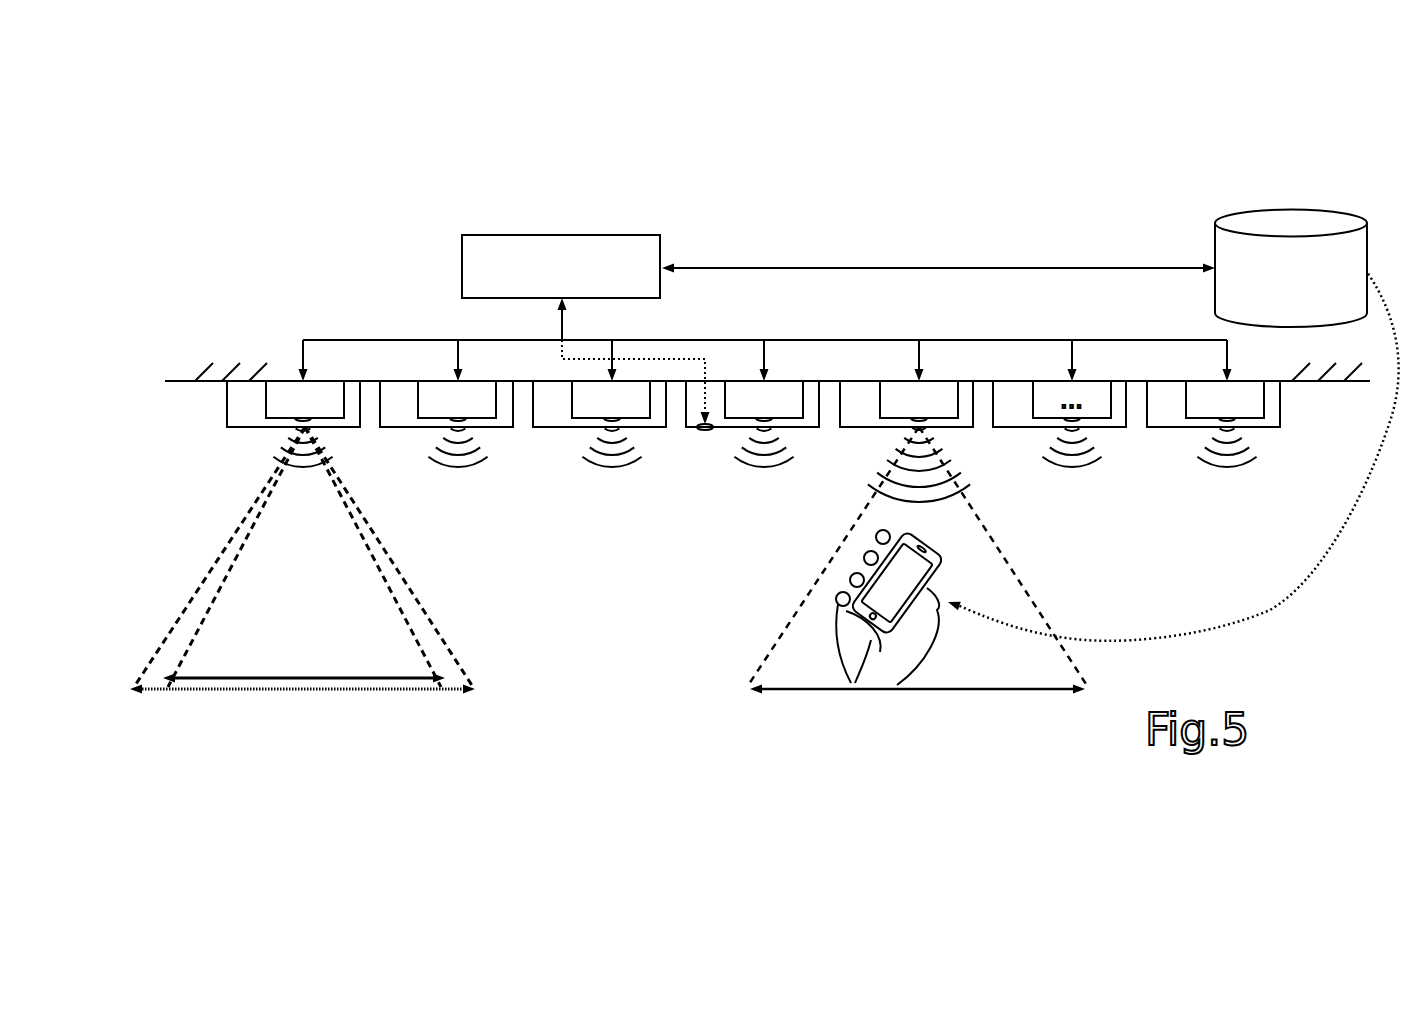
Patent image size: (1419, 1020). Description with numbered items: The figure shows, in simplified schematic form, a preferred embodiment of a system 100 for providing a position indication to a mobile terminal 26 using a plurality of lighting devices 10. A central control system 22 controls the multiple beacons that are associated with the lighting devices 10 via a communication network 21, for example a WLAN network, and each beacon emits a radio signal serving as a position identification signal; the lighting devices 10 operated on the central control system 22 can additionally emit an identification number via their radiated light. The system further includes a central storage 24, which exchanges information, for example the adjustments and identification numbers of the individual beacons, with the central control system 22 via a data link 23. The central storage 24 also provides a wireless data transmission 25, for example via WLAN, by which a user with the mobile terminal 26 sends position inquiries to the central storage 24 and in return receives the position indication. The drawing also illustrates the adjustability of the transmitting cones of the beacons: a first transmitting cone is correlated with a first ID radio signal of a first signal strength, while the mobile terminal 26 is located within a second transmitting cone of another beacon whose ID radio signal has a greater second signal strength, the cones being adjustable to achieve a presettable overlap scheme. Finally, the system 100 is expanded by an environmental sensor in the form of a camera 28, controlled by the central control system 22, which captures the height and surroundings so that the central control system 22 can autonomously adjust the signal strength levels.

The system 100 is at (538, 168).
The communication network 21 is at (381, 338).
The central control system 22 is at (612, 242).
The data link 23 is at (968, 266).
The central storage 24 is at (1282, 222).
The lighting device 10 is at (251, 430).
The camera 28 is at (707, 433).
The mobile terminal 26 is at (942, 571).
The wireless data transmission 25 is at (1345, 549).